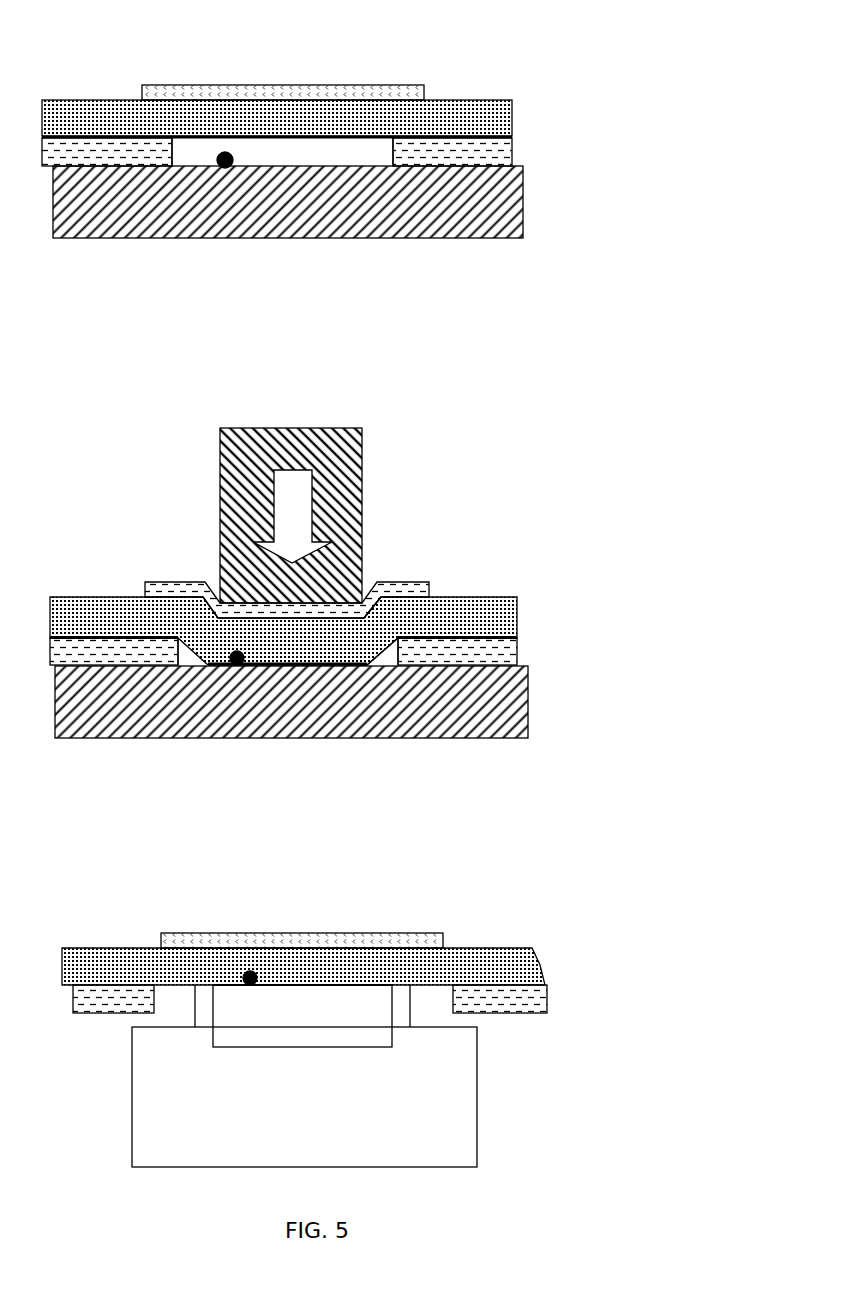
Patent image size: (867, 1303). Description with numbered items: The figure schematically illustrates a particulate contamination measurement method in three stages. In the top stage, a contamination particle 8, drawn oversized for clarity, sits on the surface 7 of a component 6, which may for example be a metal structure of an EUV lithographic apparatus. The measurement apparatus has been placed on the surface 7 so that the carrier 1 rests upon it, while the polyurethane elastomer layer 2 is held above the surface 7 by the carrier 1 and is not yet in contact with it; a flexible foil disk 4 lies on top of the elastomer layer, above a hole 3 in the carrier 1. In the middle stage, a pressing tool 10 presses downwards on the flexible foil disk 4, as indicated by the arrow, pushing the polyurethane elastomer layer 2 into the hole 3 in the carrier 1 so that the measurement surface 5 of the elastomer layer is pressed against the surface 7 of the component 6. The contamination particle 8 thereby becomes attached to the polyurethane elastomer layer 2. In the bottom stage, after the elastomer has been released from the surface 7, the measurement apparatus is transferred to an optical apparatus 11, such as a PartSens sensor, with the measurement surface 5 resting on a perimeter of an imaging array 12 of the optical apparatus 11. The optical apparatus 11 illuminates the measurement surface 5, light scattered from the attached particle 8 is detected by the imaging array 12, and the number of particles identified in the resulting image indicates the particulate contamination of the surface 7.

The carrier 1 is at (492, 147).
The polyurethane elastomer layer 2 is at (490, 119).
The hole 3 is at (308, 152).
The flexible foil disk 4 is at (260, 92).
The measurement surface 5 is at (263, 136).
The component 6 is at (490, 200).
The surface 7 is at (347, 165).
The contamination particle 8 is at (227, 152).
The pressing tool 10 is at (327, 490).
The optical apparatus 11 is at (304, 1097).
The imaging array 12 is at (242, 1035).